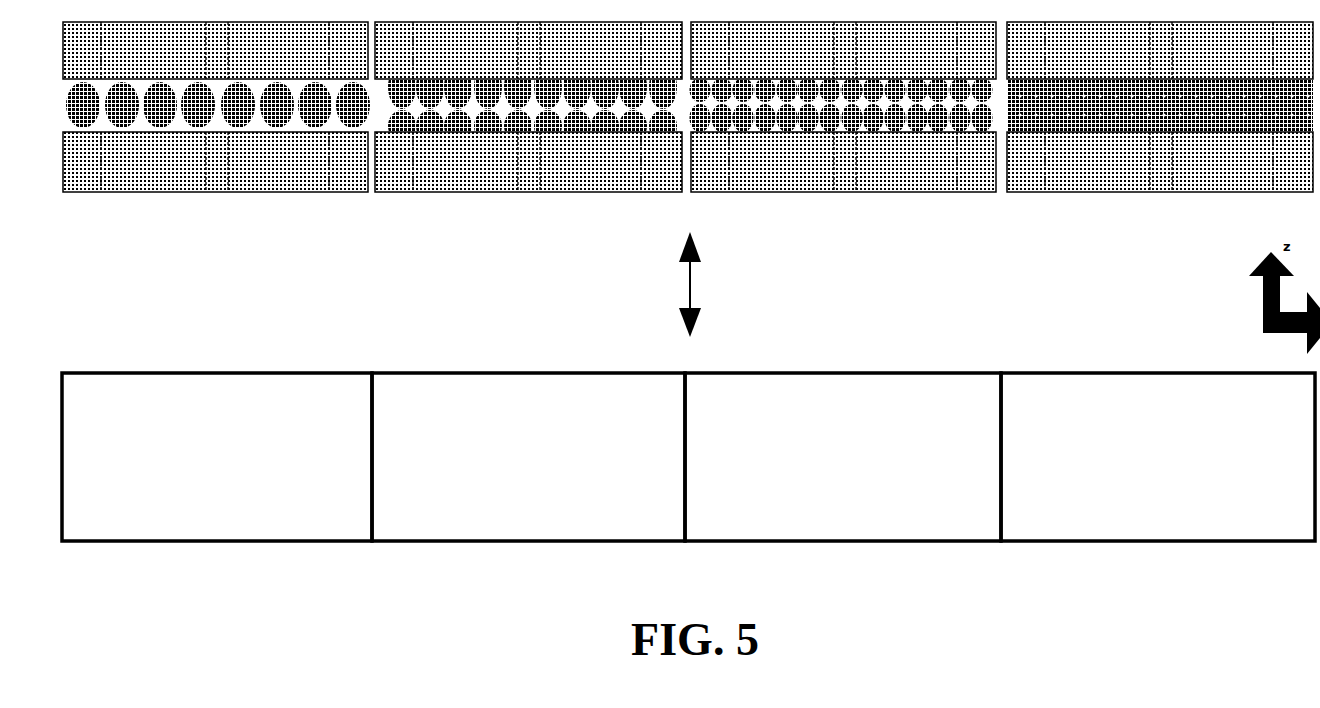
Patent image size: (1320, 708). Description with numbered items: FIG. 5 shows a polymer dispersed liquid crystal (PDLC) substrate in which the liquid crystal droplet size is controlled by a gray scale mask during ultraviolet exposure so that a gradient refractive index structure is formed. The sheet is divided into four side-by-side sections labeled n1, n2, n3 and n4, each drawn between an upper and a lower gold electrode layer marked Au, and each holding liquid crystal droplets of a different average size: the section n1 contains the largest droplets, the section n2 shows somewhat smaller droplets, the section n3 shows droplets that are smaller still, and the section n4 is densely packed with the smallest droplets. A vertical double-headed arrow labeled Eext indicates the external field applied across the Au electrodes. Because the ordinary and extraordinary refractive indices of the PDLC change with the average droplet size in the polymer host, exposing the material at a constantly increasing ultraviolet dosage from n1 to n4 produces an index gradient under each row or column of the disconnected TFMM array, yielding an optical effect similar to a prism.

The first region with monolayer of spherical nanoparticles n1 is at (217, 457).
The second region with deformed nanoparticles n2 is at (528, 457).
The third region with smaller nanoparticles n3 is at (843, 457).
The fourth region with densely packed nanoparticles n4 is at (1158, 457).
The gold electrode layer Au is at (688, 107).
The external electric field Eext is at (720, 284).